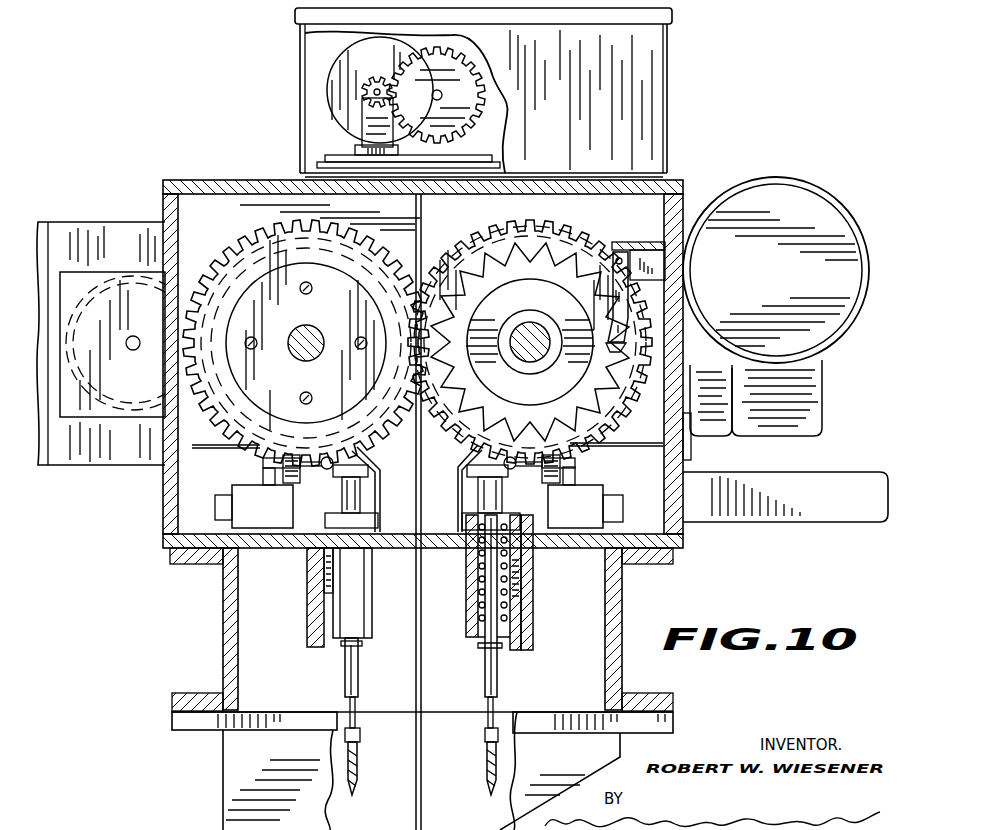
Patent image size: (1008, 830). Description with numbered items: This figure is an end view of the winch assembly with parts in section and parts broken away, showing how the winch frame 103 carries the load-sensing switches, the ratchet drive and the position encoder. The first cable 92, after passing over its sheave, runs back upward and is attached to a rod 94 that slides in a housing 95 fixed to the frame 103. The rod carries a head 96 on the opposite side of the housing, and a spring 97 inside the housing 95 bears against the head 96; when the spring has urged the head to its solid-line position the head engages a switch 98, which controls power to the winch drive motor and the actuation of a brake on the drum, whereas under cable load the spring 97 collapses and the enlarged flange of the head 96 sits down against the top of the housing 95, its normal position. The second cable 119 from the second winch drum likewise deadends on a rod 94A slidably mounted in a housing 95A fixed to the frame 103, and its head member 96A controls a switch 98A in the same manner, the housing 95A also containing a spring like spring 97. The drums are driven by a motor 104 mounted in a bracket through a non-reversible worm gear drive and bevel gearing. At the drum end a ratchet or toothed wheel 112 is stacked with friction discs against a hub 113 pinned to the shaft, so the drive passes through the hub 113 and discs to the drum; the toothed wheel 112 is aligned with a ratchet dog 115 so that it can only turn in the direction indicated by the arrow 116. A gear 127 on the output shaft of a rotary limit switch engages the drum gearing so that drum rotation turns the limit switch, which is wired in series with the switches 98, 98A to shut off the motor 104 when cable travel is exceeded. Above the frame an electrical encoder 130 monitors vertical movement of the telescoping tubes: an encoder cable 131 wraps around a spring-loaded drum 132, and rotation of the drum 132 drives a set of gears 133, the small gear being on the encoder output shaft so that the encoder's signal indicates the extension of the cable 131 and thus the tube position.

The first cable 92 is at (500, 760).
The rod 94 is at (498, 683).
The rod 94A is at (347, 685).
The housing 95 is at (470, 613).
The housing 95A is at (348, 602).
The head 96 is at (497, 488).
The head member 96A is at (340, 490).
The spring 97 is at (500, 603).
The switch 98 is at (602, 495).
The switch 98A is at (236, 482).
The frame 103 is at (678, 208).
The motor 104 is at (822, 217).
The toothed wheel 112 is at (572, 287).
The hub 113 is at (538, 298).
The ratchet dog 115 is at (627, 314).
The arrow 116 is at (518, 294).
The second cable 119 is at (360, 760).
The gear 127 is at (182, 300).
The electrical encoder 130 is at (298, 104).
The cable 131 is at (423, 483).
The drum 132 is at (470, 142).
The set of gears 133 is at (365, 92).